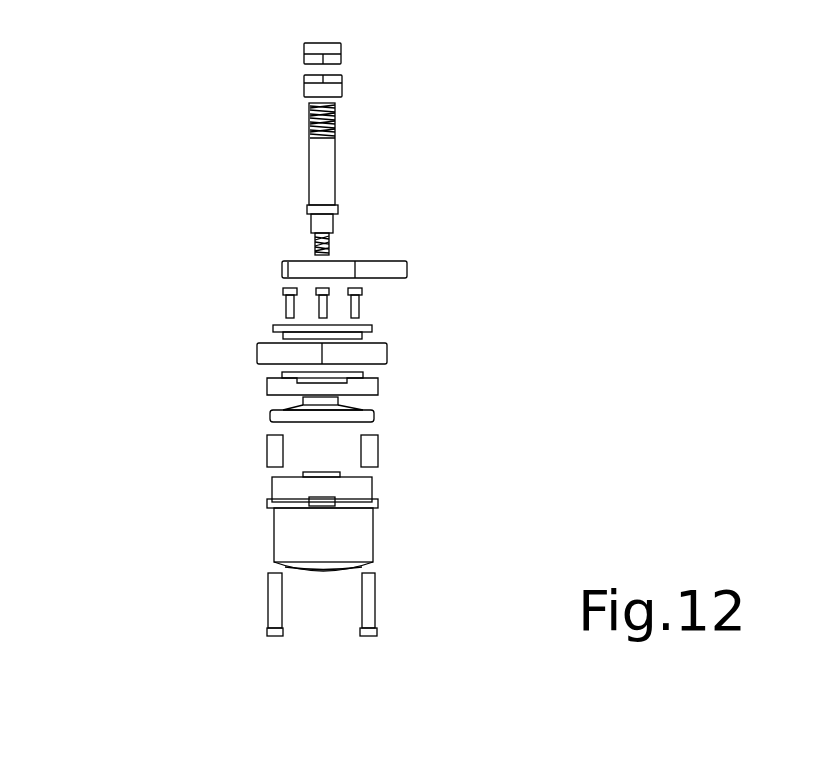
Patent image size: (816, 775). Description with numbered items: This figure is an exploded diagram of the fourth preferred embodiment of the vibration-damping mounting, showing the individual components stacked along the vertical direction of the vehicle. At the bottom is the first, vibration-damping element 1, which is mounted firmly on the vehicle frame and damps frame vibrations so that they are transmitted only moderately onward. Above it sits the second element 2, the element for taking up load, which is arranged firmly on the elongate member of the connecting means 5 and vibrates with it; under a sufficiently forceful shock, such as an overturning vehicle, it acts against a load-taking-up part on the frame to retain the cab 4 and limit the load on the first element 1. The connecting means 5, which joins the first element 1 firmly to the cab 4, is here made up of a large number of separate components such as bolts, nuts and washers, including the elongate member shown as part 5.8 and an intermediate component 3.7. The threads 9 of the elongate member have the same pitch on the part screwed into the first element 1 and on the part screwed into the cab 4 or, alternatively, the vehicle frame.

The first vibration-damping element 1 is at (362, 534).
The second element 2 is at (368, 415).
The block 3.7 is at (375, 356).
The cab 4 is at (407, 271).
The connecting means 5 is at (342, 80).
The bolt 5.8 is at (327, 160).
The threads 9 is at (312, 176).